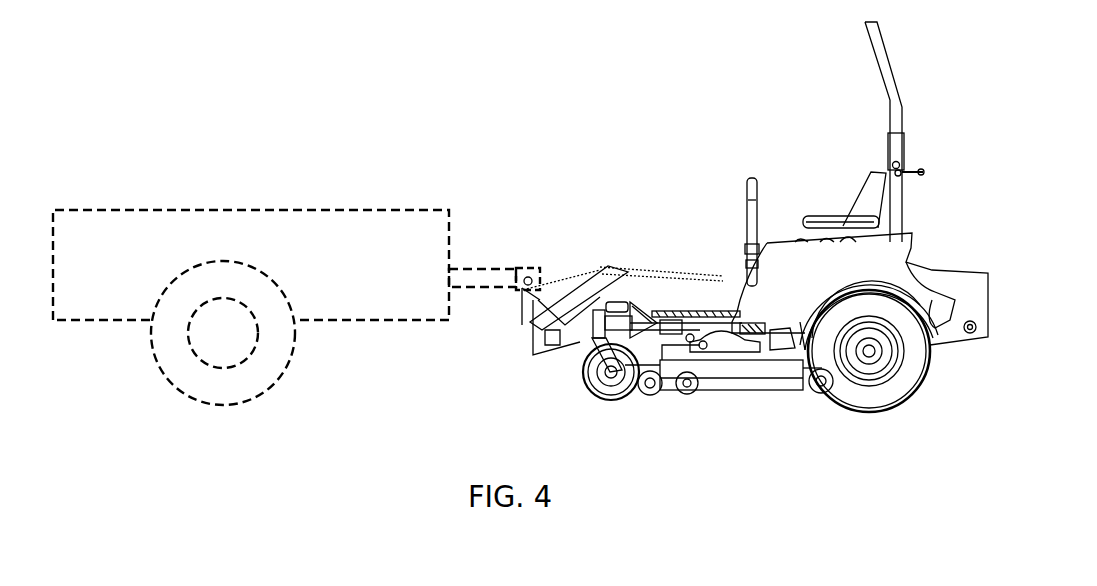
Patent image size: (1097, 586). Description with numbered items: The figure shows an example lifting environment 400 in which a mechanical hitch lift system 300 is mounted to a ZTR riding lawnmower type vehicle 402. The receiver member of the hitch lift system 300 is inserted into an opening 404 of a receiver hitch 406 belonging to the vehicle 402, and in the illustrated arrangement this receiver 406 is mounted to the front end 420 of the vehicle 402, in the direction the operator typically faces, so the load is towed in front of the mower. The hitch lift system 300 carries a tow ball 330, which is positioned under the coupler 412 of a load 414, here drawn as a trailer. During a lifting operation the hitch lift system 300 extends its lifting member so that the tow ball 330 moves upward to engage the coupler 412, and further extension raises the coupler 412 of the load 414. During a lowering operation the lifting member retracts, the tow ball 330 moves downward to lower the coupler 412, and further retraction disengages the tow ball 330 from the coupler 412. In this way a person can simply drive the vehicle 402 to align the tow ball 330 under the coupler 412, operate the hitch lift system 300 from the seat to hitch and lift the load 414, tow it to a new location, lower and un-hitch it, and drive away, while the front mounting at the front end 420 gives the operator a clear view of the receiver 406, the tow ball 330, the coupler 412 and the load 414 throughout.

The hitch lift system 300 is at (516, 350).
The tow ball 330 is at (535, 267).
The lifting environment 400 is at (938, 44).
The ZTR riding lawnmower type vehicle 402 is at (925, 128).
The opening 404 is at (584, 358).
The receiver hitch 406 is at (619, 348).
The coupler 412 is at (523, 266).
The load 414 is at (356, 198).
The front end 420 is at (648, 296).